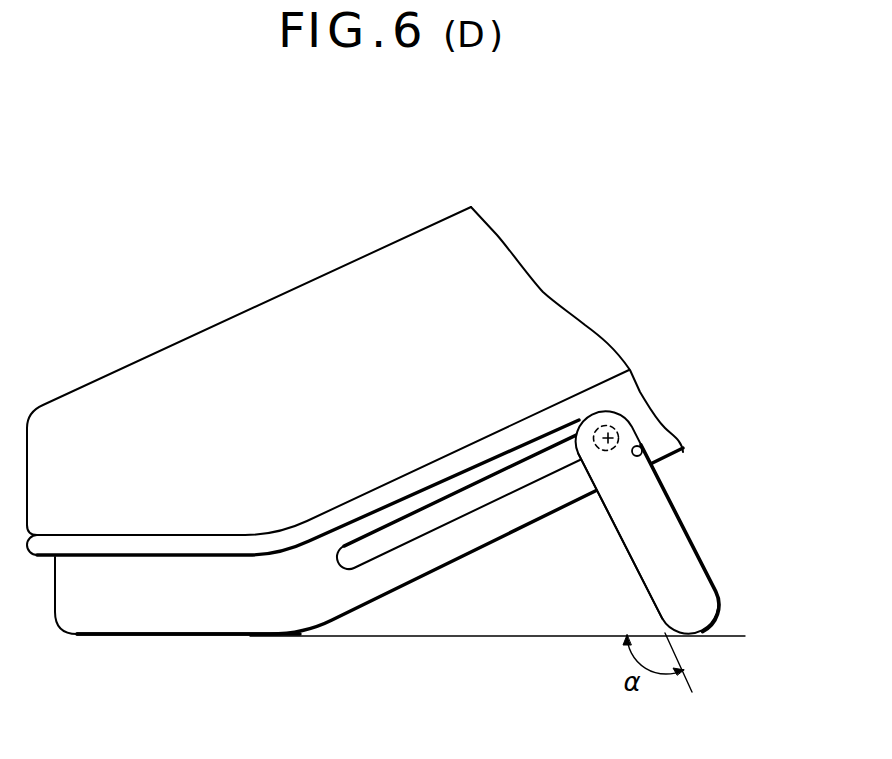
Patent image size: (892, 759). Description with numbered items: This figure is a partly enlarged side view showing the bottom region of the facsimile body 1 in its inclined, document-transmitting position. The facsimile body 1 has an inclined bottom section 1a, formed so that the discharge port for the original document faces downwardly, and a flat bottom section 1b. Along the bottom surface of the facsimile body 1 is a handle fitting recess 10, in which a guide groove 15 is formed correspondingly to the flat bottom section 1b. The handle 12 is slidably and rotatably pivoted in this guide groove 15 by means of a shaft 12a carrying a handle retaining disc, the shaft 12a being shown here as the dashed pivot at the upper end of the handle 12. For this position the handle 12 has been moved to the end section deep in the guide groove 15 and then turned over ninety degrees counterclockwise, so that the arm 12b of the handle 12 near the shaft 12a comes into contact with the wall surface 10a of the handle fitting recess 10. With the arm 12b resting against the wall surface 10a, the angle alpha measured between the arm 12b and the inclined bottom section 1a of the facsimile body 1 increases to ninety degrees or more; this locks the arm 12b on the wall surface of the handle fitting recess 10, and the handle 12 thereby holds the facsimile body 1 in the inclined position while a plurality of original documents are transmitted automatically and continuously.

The facsimile body 1 is at (245, 326).
The inclined bottom section 1a is at (195, 640).
The flat bottom section 1b is at (425, 582).
The handle fitting recess 10 is at (348, 600).
The wall surface 10a is at (650, 455).
The handle 12 is at (690, 545).
The shaft 12a is at (628, 436).
The arm 12b is at (634, 553).
The guide groove 15 is at (478, 506).